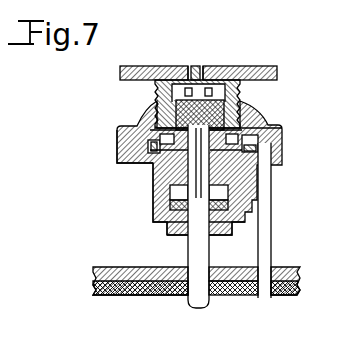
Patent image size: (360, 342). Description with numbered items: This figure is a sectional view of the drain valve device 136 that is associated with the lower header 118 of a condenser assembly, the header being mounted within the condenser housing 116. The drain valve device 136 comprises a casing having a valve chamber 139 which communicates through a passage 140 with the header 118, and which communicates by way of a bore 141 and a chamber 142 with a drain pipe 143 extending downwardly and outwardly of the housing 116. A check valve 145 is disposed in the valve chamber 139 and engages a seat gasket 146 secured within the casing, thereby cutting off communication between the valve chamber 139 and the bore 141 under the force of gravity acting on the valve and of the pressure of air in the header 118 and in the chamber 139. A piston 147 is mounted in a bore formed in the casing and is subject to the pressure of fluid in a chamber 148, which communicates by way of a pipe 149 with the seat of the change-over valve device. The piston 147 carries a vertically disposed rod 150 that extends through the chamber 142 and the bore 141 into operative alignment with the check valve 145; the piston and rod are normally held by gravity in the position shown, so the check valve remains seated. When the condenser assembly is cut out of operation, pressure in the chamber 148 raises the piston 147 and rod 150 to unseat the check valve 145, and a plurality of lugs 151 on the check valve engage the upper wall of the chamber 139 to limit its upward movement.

The housing 116 is at (140, 296).
The lower header 118 is at (262, 66).
The drain valve device 136 is at (117, 136).
The valve chamber 139 is at (222, 88).
The passage 140 is at (201, 66).
The bore 141 is at (257, 124).
The chamber 142 is at (255, 147).
The drain pipe 143 is at (266, 180).
The check valve 145 is at (155, 101).
The seat gasket 146 is at (137, 124).
The piston 147 is at (157, 188).
The chamber 148 is at (170, 226).
The pipe 149 is at (188, 238).
The rod 150 is at (165, 172).
The lugs 151 is at (184, 96).